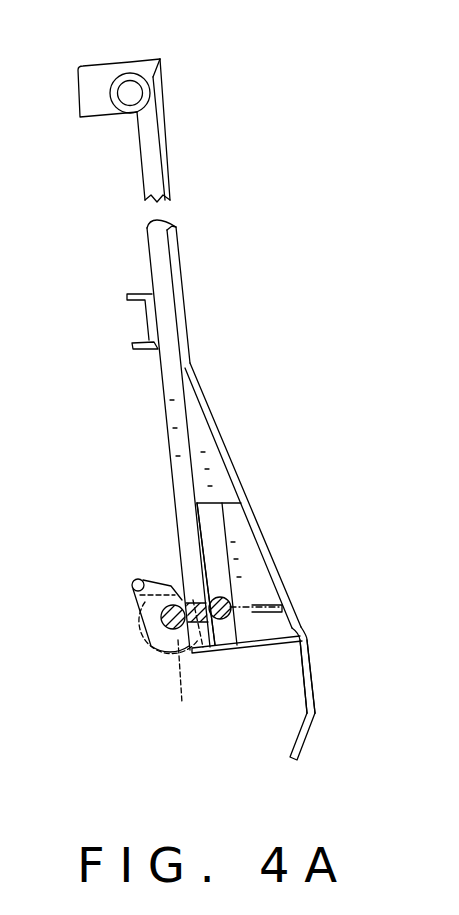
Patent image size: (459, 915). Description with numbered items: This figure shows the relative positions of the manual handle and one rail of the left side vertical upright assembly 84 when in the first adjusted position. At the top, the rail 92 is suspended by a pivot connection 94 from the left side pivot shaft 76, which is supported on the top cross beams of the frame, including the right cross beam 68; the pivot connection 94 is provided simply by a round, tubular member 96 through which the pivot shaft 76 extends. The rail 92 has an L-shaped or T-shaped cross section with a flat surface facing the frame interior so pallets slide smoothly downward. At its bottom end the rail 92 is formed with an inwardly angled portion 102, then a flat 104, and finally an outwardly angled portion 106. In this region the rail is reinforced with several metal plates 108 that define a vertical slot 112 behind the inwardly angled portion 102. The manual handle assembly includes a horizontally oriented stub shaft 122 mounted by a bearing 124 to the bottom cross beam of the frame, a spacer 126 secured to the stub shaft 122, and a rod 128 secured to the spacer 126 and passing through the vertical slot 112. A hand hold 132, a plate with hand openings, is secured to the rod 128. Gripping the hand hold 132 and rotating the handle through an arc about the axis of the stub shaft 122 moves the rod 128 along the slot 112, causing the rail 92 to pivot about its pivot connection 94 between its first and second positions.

The right cross beam 68 is at (95, 72).
The left side pivot shaft 76 is at (128, 94).
The pivot connection 94 is at (140, 72).
The round tubular member 96 is at (127, 72).
The left side vertical upright assembly 84 is at (192, 352).
The rail 92 is at (207, 400).
The inwardly angled portion 102 is at (273, 542).
The flat 104 is at (318, 697).
The outwardly angled portion 106 is at (313, 737).
The metal plate 108 is at (203, 458).
The vertical slot 112 is at (209, 533).
The stub shaft 122 is at (160, 640).
The bearing 124 is at (181, 700).
The spacer 126 is at (140, 597).
The rod 128 is at (207, 603).
The hand hold 132 is at (270, 613).